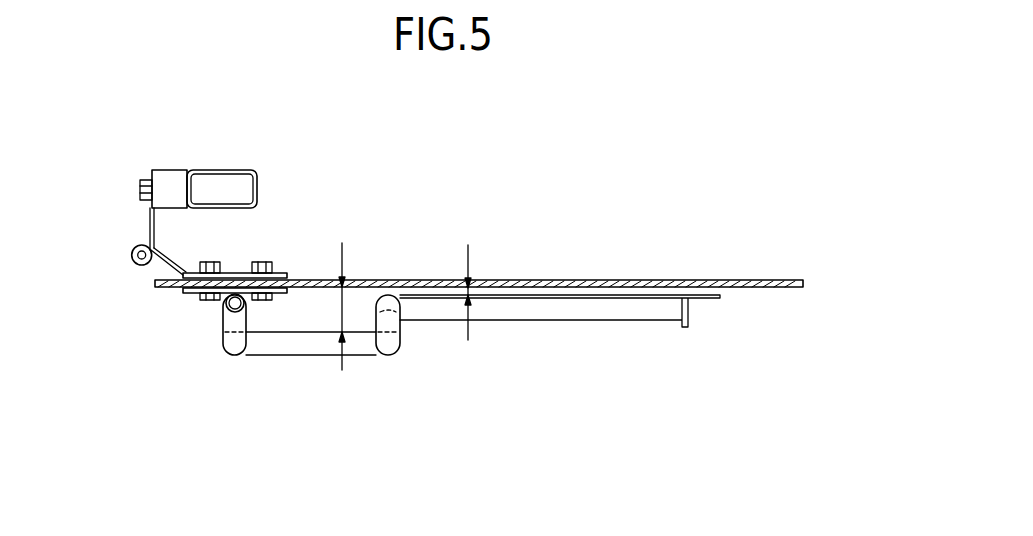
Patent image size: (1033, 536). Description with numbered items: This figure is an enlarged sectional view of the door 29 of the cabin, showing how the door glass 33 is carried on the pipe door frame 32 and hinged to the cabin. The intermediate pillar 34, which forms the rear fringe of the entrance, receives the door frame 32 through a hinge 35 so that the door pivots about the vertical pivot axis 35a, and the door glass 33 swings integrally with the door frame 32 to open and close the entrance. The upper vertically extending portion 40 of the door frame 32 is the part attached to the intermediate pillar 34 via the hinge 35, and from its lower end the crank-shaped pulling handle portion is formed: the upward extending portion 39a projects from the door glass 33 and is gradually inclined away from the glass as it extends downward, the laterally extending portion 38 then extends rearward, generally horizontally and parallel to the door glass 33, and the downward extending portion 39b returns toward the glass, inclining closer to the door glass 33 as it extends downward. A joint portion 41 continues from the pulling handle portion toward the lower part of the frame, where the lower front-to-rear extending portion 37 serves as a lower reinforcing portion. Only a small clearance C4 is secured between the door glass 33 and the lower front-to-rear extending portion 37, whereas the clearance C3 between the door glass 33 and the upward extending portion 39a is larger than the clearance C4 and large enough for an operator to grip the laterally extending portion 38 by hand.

The door 29 is at (667, 281).
The door frame 32 is at (498, 322).
The door glass 33 is at (563, 280).
The intermediate pillar 34 is at (223, 170).
The hinge 35 is at (132, 249).
The vertical pivot axis 35a is at (135, 265).
The lower front-to-rear extending portion 37 is at (577, 321).
The laterally extending portion 38 is at (297, 356).
The upward extending portion 39a is at (222, 328).
The downward extending portion 39b is at (400, 325).
The upper vertically extending portion 40 is at (223, 316).
The joint portion 41 is at (380, 296).
The clearance C3 is at (341, 291).
The clearance C4 is at (464, 276).